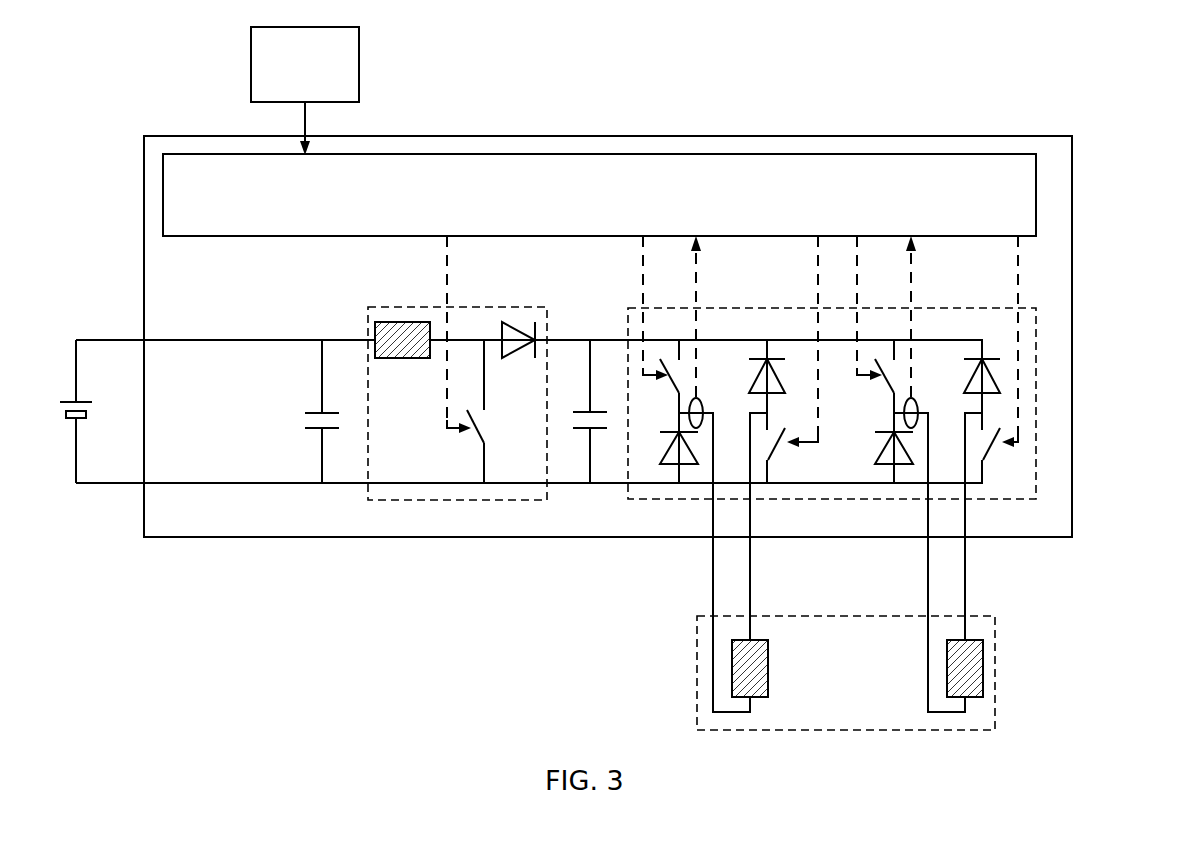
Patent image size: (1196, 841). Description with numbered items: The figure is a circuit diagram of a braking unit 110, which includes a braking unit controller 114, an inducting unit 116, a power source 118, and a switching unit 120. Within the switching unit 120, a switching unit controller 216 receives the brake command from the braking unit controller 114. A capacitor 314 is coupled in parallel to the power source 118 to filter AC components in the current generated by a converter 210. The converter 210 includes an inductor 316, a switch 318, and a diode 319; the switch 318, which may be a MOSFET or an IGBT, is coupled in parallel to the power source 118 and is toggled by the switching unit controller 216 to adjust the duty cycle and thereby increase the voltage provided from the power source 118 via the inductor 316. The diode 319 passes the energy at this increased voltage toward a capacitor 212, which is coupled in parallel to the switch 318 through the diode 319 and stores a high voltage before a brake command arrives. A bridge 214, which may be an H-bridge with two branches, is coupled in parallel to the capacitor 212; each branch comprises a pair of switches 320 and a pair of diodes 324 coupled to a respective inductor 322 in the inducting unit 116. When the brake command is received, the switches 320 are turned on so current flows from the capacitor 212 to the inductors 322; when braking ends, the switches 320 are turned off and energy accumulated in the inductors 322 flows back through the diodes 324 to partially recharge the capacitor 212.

The braking unit 110 is at (1084, 68).
The braking unit controller 114 is at (361, 70).
The inducting unit 116 is at (997, 625).
The power source 118 is at (70, 421).
The switching unit 120 is at (1073, 277).
The converter 210 is at (450, 502).
The capacitor 212 is at (583, 432).
The bridge 214 is at (1037, 398).
The switching unit controller 216 is at (865, 154).
The capacitor 314 is at (314, 432).
The inductor 316 is at (410, 359).
The switch 318 is at (483, 433).
The diode 319 is at (522, 322).
The switches 320 is at (668, 355).
The inductors 322 is at (770, 665).
The diodes 324 is at (758, 355).